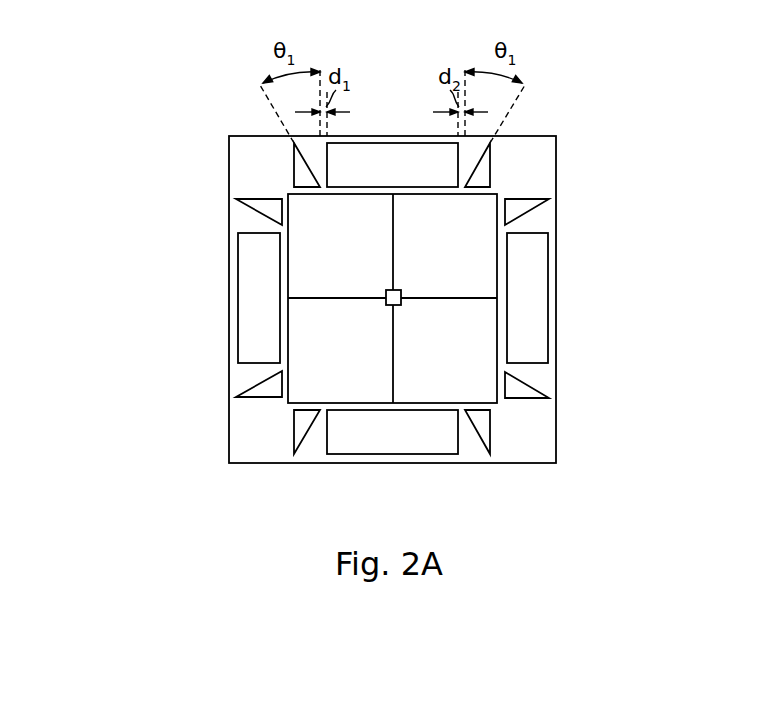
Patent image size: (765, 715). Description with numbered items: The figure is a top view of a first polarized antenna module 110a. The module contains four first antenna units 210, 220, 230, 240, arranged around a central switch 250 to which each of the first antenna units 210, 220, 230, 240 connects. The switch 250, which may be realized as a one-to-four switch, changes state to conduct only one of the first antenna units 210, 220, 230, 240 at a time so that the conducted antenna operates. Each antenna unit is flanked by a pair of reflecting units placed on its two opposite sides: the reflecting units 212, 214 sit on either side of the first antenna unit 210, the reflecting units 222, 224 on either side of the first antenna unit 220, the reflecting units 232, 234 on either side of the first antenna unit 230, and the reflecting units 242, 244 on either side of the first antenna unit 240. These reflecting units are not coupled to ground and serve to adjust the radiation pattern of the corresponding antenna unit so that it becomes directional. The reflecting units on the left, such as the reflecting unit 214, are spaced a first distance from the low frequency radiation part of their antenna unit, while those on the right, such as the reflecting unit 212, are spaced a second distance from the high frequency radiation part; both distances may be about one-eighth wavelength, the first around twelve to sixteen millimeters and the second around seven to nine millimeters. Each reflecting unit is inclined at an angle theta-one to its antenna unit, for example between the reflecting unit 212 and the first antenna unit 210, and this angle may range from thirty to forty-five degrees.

The first polarized antenna module 110a is at (122, 40).
The first antenna unit 210 is at (392, 157).
The reflecting unit 212 is at (488, 170).
The reflecting unit 214 is at (297, 168).
The first antenna unit 220 is at (250, 261).
The reflecting unit 222 is at (263, 210).
The reflecting unit 224 is at (265, 386).
The first antenna unit 230 is at (392, 440).
The reflecting unit 232 is at (298, 430).
The reflecting unit 234 is at (487, 427).
The first antenna unit 240 is at (535, 261).
The reflecting unit 242 is at (522, 387).
The reflecting unit 244 is at (522, 212).
The switch 250 is at (386, 300).